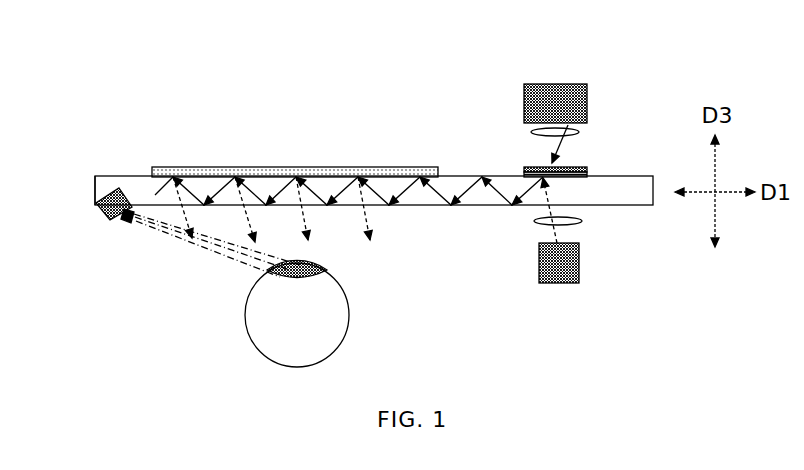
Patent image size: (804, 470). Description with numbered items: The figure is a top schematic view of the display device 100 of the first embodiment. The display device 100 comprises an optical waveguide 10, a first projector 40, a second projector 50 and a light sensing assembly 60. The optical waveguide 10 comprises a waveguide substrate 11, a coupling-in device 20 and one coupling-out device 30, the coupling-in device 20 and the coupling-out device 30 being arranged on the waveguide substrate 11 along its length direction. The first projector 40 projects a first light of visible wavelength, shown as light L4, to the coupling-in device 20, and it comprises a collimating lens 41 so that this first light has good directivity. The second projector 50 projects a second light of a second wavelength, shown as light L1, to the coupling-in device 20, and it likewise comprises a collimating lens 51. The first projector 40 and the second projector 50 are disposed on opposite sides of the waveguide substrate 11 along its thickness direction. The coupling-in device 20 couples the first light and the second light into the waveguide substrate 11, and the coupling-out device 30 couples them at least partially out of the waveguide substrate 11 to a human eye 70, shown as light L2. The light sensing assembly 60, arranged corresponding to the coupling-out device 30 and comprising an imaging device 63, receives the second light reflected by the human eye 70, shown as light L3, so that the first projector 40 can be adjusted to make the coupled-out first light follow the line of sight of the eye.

The display device 100 is at (92, 31).
The optical waveguide 10 is at (72, 197).
The waveguide substrate 11 is at (118, 181).
The coupling-in device 20 is at (568, 168).
The coupling-out device 30 is at (316, 166).
The first projector 40 is at (556, 84).
The collimating lens 41 is at (532, 131).
The second projector 50 is at (563, 284).
The collimating lens 51 is at (583, 221).
The light sensing assembly 60 is at (113, 221).
The imaging device 63 is at (99, 206).
The human eye 70 is at (335, 312).
The second light L1 is at (541, 211).
The coupled-out light L2 is at (370, 222).
The reflected second light L3 is at (215, 260).
The first light L4 is at (553, 143).